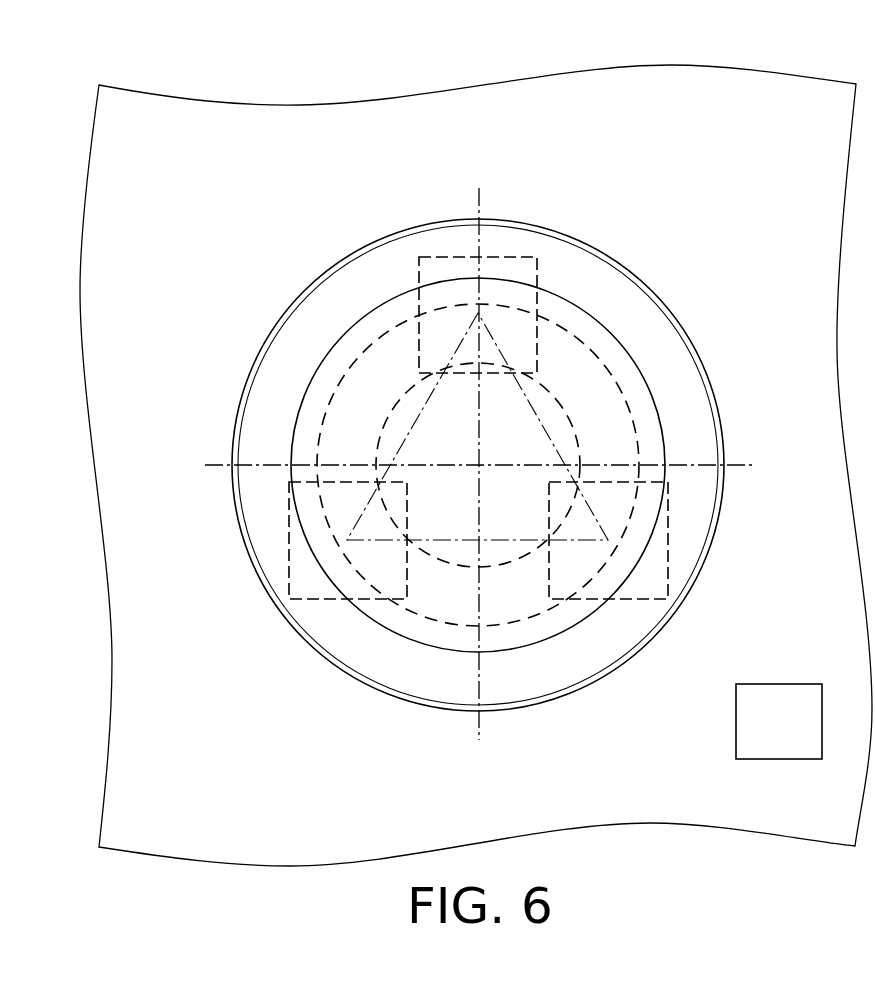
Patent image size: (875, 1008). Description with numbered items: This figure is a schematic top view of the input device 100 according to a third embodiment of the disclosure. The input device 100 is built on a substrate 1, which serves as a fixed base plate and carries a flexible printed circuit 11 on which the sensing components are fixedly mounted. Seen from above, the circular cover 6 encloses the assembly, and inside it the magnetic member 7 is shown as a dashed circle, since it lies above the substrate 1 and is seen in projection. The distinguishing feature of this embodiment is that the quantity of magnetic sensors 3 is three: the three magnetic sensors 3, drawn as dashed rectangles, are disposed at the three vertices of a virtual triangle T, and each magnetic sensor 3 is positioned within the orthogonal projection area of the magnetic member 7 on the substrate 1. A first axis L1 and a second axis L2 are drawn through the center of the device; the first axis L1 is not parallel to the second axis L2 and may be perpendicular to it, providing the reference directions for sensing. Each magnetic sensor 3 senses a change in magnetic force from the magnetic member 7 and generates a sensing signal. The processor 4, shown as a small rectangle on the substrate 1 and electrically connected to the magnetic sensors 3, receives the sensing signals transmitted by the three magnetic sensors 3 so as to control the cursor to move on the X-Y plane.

The input device 100 is at (778, 48).
The substrate 1 is at (90, 203).
The flexible printed circuit 11 is at (115, 373).
The cover 6 is at (357, 262).
The magnetic member 7 is at (583, 350).
The magnetic sensor 3 is at (447, 257).
The processor 4 is at (797, 690).
The virtual triangle T is at (420, 395).
The first axis L1 is at (481, 205).
The second axis L2 is at (739, 468).